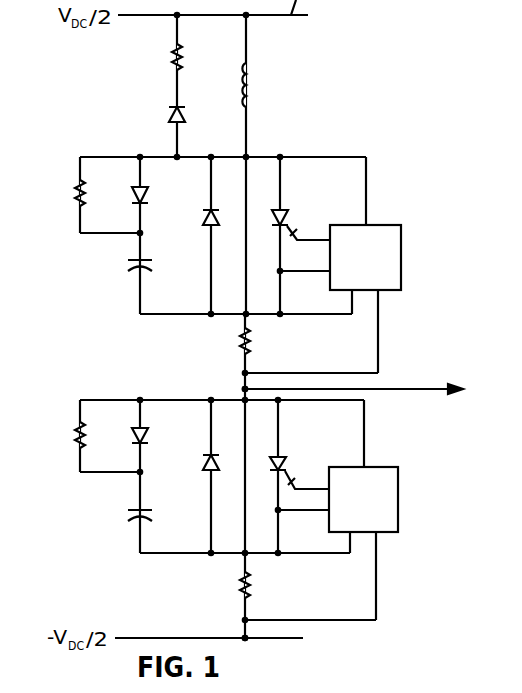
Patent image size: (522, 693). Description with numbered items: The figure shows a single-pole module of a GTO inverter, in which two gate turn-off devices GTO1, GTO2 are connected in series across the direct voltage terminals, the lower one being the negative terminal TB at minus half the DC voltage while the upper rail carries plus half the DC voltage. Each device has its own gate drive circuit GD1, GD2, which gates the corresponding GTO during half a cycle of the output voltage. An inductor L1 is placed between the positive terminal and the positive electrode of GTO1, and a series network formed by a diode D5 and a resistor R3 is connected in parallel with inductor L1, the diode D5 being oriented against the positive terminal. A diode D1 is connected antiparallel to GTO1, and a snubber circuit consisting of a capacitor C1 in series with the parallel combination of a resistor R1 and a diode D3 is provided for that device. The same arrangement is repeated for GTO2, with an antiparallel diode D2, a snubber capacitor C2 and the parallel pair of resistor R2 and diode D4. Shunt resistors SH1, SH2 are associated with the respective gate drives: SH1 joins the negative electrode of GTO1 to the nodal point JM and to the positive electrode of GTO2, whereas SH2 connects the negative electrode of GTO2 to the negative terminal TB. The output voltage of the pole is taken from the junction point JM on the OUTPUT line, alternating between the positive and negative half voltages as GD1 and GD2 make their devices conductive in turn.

The resistor R1 is at (78, 198).
The resistor R2 is at (78, 436).
The resistor R3 is at (173, 60).
The diode D1 is at (206, 215).
The diode D2 is at (206, 469).
The diode D3 is at (135, 197).
The diode D4 is at (135, 441).
The diode D5 is at (170, 111).
The inductor L1 is at (252, 78).
The capacitor C1 is at (129, 263).
The capacitor C2 is at (129, 518).
The GTO device GTO1 is at (288, 221).
The GTO device GTO2 is at (288, 457).
The gate drive circuit GD1 is at (386, 226).
The gate drive circuit GD2 is at (386, 468).
The shunt resistor SH1 is at (242, 345).
The shunt resistor SH2 is at (238, 586).
The nodal point JM is at (240, 389).
The output line OUTPUT is at (422, 383).
The negative DC voltage terminal TB is at (293, 639).